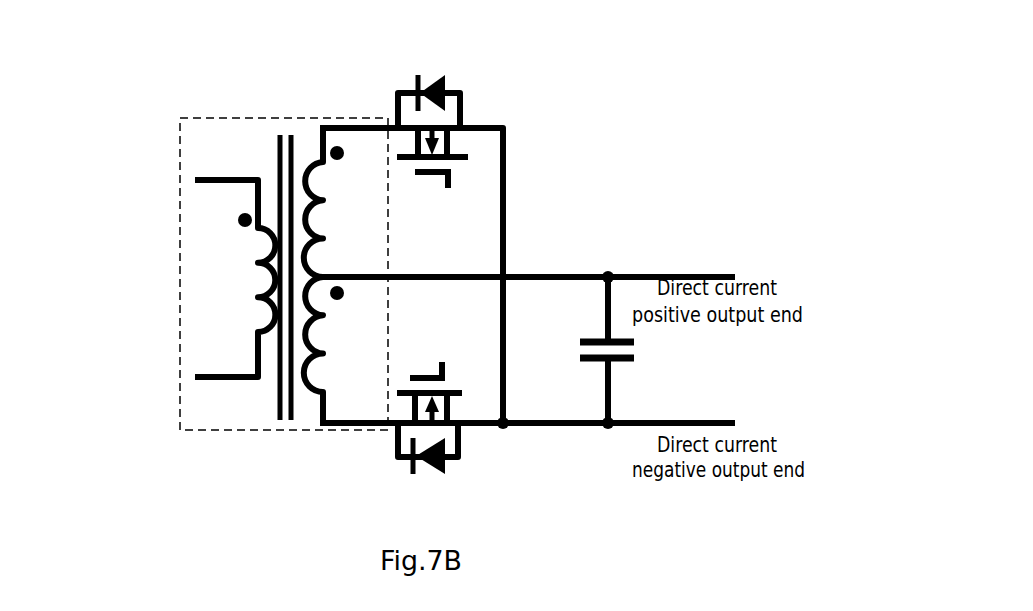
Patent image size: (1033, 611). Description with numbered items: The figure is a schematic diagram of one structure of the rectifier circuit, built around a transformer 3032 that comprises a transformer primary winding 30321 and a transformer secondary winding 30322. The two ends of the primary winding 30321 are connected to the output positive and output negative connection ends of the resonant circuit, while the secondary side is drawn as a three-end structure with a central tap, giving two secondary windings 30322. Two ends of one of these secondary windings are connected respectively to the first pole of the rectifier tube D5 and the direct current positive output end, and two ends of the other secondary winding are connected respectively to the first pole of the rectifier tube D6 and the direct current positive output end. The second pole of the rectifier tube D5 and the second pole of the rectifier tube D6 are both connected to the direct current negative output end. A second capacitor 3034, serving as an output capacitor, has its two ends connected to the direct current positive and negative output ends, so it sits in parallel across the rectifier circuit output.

The transformer 3032 is at (232, 118).
The transformer primary winding 30321 is at (267, 242).
The transformer secondary winding 30322 is at (320, 385).
The second capacitor 3034 is at (630, 355).
The rectifier tube D5 is at (452, 101).
The rectifier tube D6 is at (447, 448).